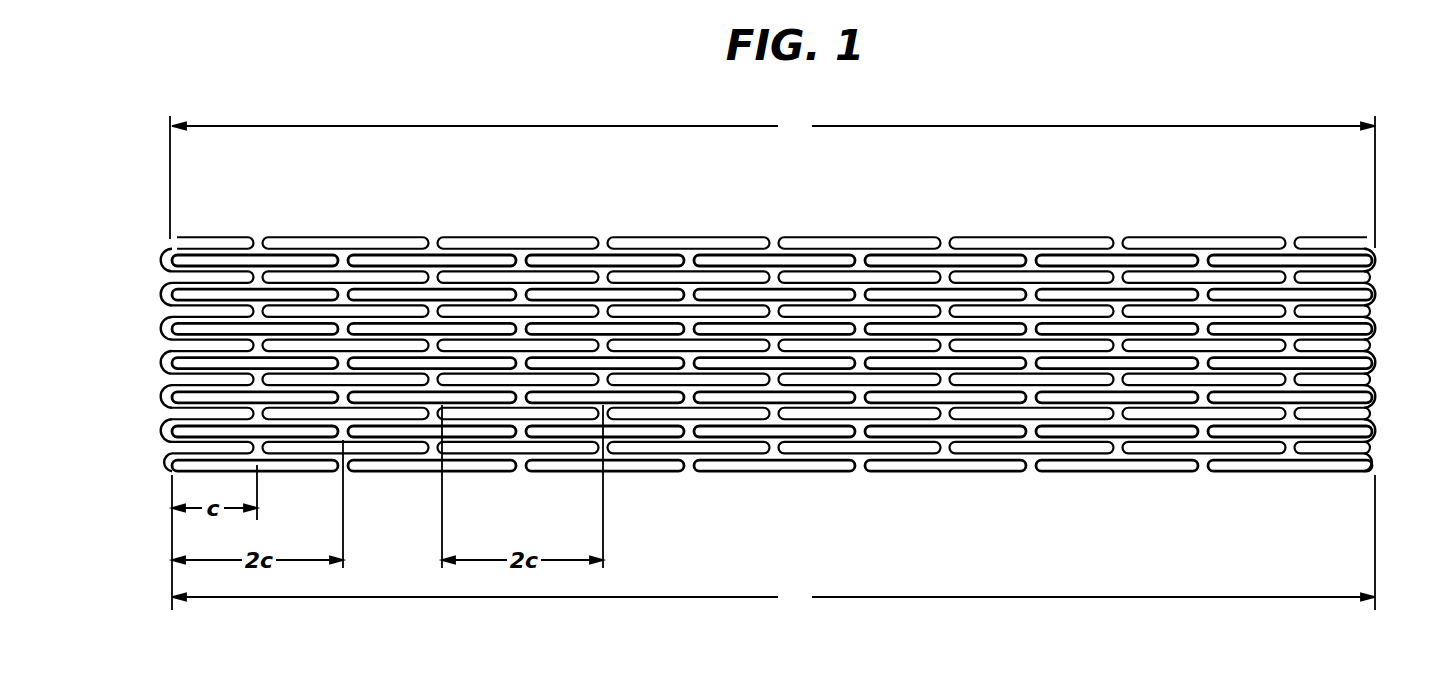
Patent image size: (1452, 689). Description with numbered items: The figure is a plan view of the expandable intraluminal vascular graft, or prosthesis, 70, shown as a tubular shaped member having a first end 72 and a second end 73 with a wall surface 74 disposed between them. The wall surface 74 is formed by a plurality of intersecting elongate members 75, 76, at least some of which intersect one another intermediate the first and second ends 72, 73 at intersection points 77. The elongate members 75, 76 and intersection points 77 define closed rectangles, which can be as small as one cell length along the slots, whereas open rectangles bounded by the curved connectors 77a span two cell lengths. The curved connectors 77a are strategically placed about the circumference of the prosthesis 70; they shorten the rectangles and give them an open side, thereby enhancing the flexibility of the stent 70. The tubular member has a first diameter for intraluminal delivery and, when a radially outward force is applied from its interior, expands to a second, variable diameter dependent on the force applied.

The expandable intraluminal vascular graft 70 is at (769, 348).
The first end 72 is at (172, 333).
The second end 73 is at (1377, 296).
The wall surface 74 is at (772, 362).
The elongate members 75 is at (645, 267).
The elongate members 76 is at (523, 253).
The intersection points 77 is at (688, 252).
The curved connectors 77a is at (481, 442).